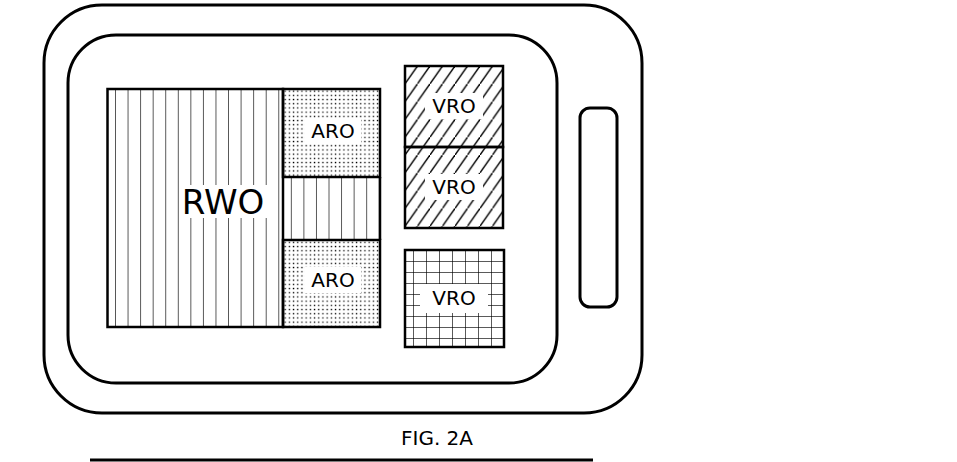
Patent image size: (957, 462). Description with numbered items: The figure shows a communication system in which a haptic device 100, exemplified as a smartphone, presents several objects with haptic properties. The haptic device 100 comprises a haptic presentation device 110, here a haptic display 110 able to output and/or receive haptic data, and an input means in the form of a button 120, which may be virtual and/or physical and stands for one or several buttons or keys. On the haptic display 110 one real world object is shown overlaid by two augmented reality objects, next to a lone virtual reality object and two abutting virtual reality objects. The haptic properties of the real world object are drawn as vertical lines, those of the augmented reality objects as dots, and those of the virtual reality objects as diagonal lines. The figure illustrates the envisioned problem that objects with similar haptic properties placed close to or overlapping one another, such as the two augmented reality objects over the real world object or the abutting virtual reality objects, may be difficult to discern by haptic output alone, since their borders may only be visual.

The haptic device 100 is at (643, 227).
The haptic presentation device 110 is at (543, 353).
The button 120 is at (618, 273).